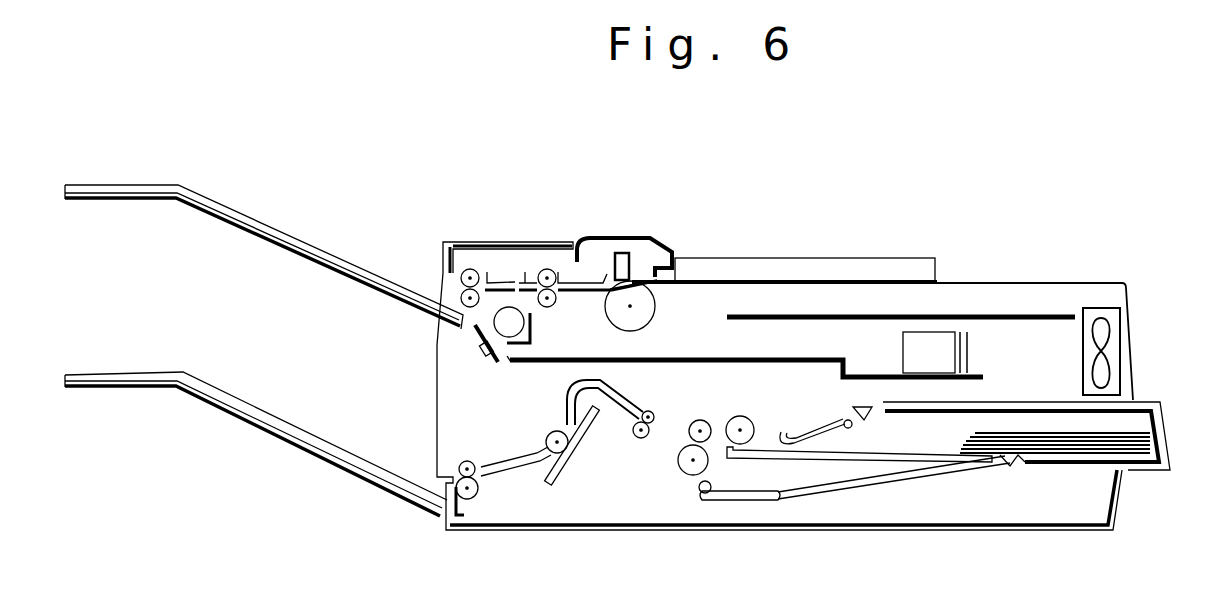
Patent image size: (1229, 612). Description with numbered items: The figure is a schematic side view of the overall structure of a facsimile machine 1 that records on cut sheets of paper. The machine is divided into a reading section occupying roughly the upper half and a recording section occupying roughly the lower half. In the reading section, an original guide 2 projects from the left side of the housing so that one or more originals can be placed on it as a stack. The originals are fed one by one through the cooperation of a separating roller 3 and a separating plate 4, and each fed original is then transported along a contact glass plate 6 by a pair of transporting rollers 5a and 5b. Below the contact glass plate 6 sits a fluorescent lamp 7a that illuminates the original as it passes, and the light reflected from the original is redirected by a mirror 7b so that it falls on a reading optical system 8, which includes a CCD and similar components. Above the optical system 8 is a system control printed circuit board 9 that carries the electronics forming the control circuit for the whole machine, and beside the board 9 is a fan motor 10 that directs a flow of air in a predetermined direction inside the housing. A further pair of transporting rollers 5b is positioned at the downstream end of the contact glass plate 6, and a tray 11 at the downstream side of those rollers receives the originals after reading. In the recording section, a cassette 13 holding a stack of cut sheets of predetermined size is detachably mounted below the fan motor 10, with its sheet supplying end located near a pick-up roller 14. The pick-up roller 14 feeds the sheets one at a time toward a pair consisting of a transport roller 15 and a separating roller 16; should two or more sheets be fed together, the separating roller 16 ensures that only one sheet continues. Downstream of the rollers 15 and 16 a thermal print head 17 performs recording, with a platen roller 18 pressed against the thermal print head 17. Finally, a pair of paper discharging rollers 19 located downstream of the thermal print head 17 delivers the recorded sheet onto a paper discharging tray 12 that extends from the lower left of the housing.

The facsimile machine 1 is at (1039, 272).
The original guide 2 is at (857, 272).
The separating roller 3 is at (646, 318).
The separating plate 4 is at (622, 255).
The transporting roller 5a is at (548, 269).
The transporting rollers 5b is at (470, 268).
The contact glass plate 6 is at (502, 290).
The fluorescent lamp 7a is at (518, 327).
The mirror 7b is at (488, 360).
The reading optical system 8 is at (950, 352).
The system control printed circuit board 9 is at (1028, 315).
The fan motor 10 is at (1113, 348).
The tray 11 is at (308, 253).
The paper discharging tray 12 is at (298, 433).
The cassette 13 is at (1137, 423).
The pick-up roller 14 is at (746, 421).
The transport roller 15 is at (704, 421).
The separating roller 16 is at (685, 471).
The thermal print head 17 is at (584, 434).
The platen roller 18 is at (552, 434).
The paper discharging rollers 19 is at (478, 488).